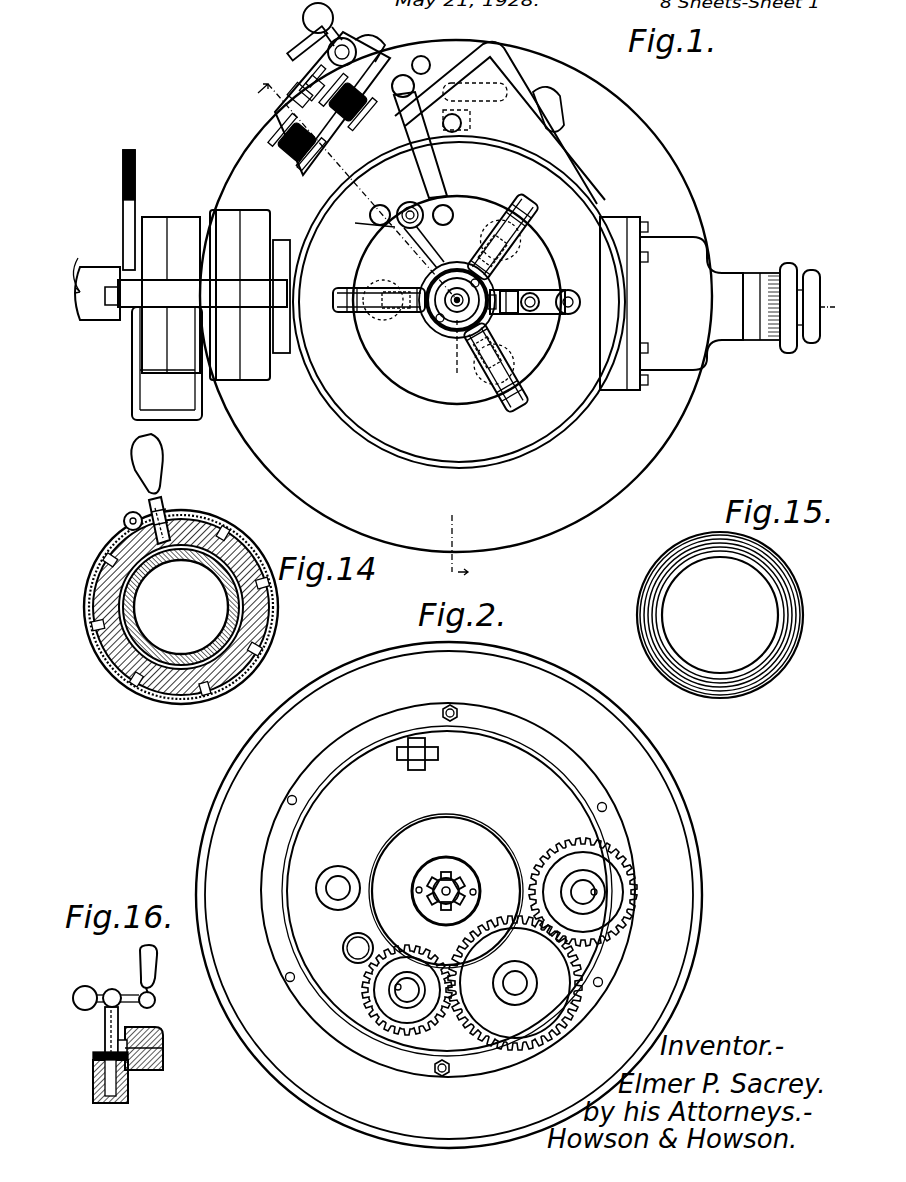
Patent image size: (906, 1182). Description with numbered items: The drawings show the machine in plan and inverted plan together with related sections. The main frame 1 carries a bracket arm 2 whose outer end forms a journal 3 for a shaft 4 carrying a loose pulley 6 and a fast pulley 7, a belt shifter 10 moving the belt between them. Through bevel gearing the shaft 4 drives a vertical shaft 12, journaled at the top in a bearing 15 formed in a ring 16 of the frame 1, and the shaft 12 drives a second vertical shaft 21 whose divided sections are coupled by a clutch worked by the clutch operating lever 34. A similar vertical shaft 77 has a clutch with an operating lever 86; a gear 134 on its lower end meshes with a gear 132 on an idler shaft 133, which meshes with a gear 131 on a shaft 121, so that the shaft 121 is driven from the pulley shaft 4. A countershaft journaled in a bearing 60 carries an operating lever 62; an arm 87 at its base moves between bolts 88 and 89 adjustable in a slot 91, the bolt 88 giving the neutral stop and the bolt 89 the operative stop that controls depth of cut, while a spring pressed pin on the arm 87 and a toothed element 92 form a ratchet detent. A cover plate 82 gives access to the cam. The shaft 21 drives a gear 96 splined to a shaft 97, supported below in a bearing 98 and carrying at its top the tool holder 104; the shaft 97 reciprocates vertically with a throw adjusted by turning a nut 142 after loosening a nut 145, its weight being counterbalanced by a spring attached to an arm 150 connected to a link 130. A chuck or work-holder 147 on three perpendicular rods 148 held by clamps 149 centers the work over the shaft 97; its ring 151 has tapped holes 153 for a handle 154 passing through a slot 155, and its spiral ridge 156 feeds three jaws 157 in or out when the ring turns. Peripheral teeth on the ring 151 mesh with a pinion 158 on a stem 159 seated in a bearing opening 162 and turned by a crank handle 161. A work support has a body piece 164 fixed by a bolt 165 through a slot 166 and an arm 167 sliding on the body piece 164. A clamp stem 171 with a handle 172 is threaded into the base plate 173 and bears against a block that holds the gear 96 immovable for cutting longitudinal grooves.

In FIG. 1, the main frame 1 is at (648, 141).
In FIG. 2, the main frame 1 is at (220, 813).
In FIG. 1, the bracket arm 2 is at (108, 314).
In FIG. 1, the journal 3 is at (104, 295).
In FIG. 1, the shaft 4 is at (276, 334).
In FIG. 1, the loose pulley 6 is at (170, 218).
In FIG. 1, the fast pulley 7 is at (252, 212).
In FIG. 1, the belt shifter 10 is at (204, 296).
In FIG. 2, the vertical shaft 12 is at (338, 890).
In FIG. 1, the bearing 15 is at (450, 283).
In FIG. 1, the ring 16 is at (388, 196).
In FIG. 2, the second vertical shaft 21 is at (347, 947).
In FIG. 1, the clutch operating lever 34 is at (293, 163).
In FIG. 1, the bearing 60 is at (409, 66).
In FIG. 1, the operating lever 62 is at (334, 14).
In FIG. 2, the vertical shaft 77 is at (398, 992).
In FIG. 1, the cover plate 82 is at (455, 54).
In FIG. 1, the operating lever 86 is at (352, 101).
In FIG. 1, the arm 87 is at (287, 99).
In FIG. 1, the bolt 88 is at (304, 88).
In FIG. 1, the bolt 89 is at (312, 74).
In FIG. 1, the slot 91 is at (305, 50).
In FIG. 1, the toothed element 92 is at (373, 60).
In FIG. 2, the gear 96 is at (440, 880).
In FIG. 2, the shaft 97 is at (452, 876).
In FIG. 2, the bearing 98 is at (425, 902).
In FIG. 1, the tool holder 104 is at (427, 281).
In FIG. 2, the shaft 121 is at (583, 896).
In FIG. 2, the link 130 is at (418, 760).
In FIG. 2, the gear 131 is at (553, 848).
In FIG. 2, the gear 132 is at (520, 1052).
In FIG. 2, the idler shaft 133 is at (515, 974).
In FIG. 2, the gear 134 is at (385, 1020).
In FIG. 1, the nut 142 is at (788, 268).
In FIG. 1, the nut 145 is at (811, 344).
In FIG. 1, the chuck or work-holder 147 is at (531, 253).
In FIG. 16, the chuck or work-holder 147 is at (135, 1072).
In FIG. 1, the perpendicular rods 148 is at (393, 318).
In FIG. 1, the clamps 149 is at (514, 372).
In FIG. 15, the arm 150 is at (657, 645).
In FIG. 14, the ring 151 is at (277, 615).
In FIG. 15, the ring 151 is at (665, 556).
In FIG. 16, the ring 151 is at (164, 1058).
In FIG. 14, the tapped holes 153 is at (218, 540).
In FIG. 1, the handle 154 is at (433, 169).
In FIG. 14, the handle 154 is at (160, 471).
In FIG. 14, the slot 155 is at (186, 515).
In FIG. 16, the spiral ridge 156 is at (150, 1040).
In FIG. 1, the jaws 157 is at (501, 284).
In FIG. 1, the pinion 158 is at (409, 205).
In FIG. 16, the pinion 158 is at (92, 1057).
In FIG. 1, the stem 159 is at (408, 229).
In FIG. 16, the stem 159 is at (105, 1025).
In FIG. 1, the crank handle 161 is at (453, 215).
In FIG. 16, the crank handle 161 is at (140, 970).
In FIG. 1, the bearing opening 162 is at (375, 221).
In FIG. 14, the bearing opening 162 is at (125, 518).
In FIG. 16, the bearing opening 162 is at (92, 1085).
In FIG. 1, the body piece 164 is at (553, 288).
In FIG. 1, the bolt 165 is at (538, 312).
In FIG. 1, the slot 166 is at (551, 302).
In FIG. 1, the arm 167 is at (497, 318).
In FIG. 1, the stem 171 is at (471, 119).
In FIG. 1, the crank or handle 172 is at (480, 97).
In FIG. 2, the base plate 173 is at (447, 891).